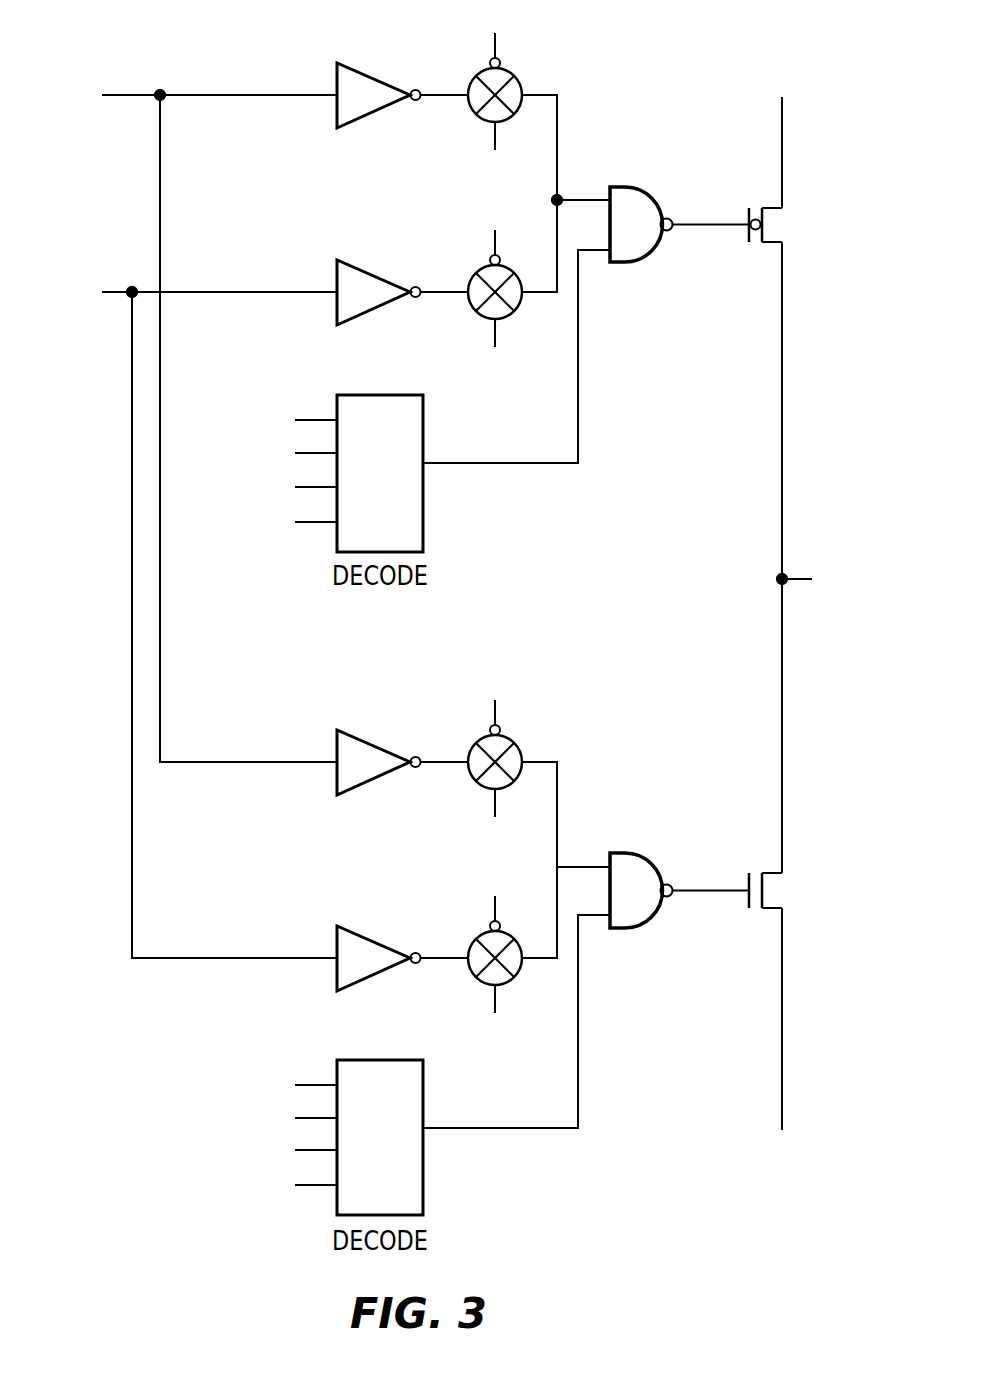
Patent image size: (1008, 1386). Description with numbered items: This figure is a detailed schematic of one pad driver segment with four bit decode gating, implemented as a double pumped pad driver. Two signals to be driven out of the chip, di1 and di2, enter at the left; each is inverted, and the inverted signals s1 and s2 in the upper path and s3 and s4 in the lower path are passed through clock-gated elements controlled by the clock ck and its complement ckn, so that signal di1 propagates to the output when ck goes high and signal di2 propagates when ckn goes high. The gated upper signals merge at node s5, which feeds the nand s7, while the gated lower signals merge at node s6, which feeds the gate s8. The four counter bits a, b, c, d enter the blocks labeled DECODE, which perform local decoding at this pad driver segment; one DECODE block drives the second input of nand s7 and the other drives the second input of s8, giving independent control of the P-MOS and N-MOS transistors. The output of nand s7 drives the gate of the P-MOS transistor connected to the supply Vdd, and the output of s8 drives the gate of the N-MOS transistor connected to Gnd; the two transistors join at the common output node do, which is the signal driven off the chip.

The first data input signal di1 is at (190, 422).
The second data input signal di2 is at (183, 619).
The inverted first data signal s1 is at (402, 95).
The inverted second data signal s2 is at (402, 292).
The inverted first data signal for N-MOS path s3 is at (402, 762).
The inverted second data signal for N-MOS path s4 is at (402, 958).
The P-MOS gate input node s5 is at (566, 193).
The N-MOS gate input node s6 is at (566, 860).
The nand s7 is at (679, 224).
The nor s8 is at (679, 890).
The clock signal ck is at (495, 587).
The inverted clock signal ckn is at (495, 521).
The counter bit a is at (294, 752).
The counter bit b is at (294, 785).
The counter bit c is at (294, 818).
The counter bit d is at (294, 853).
The supply voltage Vdd is at (782, 135).
The ground Gnd is at (781, 1042).
The data output do is at (821, 557).